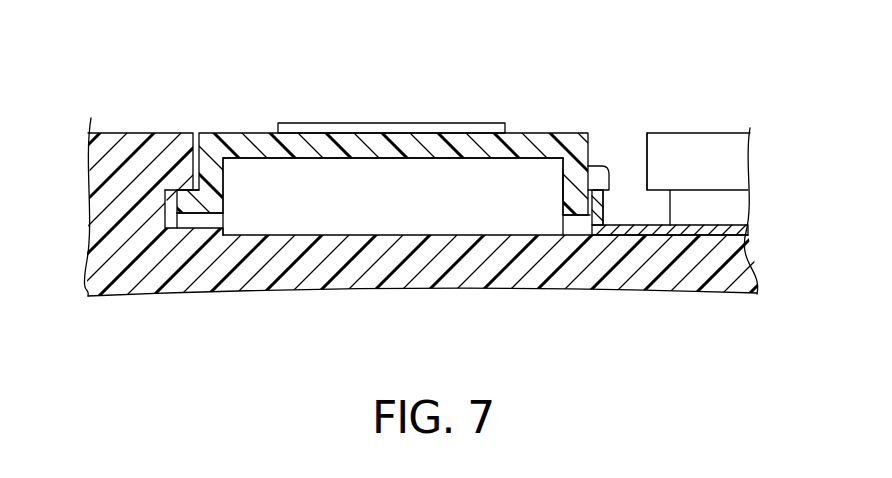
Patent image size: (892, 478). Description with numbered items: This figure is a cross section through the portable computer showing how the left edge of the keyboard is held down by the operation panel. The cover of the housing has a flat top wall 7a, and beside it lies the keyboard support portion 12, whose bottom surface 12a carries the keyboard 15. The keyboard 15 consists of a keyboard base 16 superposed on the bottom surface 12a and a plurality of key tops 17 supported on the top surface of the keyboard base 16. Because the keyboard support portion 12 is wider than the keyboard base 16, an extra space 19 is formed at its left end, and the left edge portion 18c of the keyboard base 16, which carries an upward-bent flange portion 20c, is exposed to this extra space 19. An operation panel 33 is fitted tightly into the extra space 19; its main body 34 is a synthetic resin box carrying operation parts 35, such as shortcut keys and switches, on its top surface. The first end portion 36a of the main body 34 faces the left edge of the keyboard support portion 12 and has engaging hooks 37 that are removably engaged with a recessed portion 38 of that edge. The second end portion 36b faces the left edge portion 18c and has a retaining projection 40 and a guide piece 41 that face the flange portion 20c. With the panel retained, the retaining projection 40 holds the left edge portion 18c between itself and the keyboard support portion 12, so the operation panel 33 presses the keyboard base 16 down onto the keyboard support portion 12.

The top wall 7a is at (122, 133).
The keyboard support portion 12 is at (650, 207).
The bottom surface 12a is at (693, 268).
The keyboard 15 is at (753, 136).
The keyboard base 16 is at (720, 228).
The key tops 17 is at (717, 147).
The left edge portion 18c is at (595, 225).
The extra space 19 is at (397, 235).
The flange portion 20c is at (606, 205).
The operation panel 33 is at (230, 133).
The main body 34 is at (328, 142).
The operation parts 35 is at (438, 125).
The first end portion 36a is at (213, 178).
The second end portion 36b is at (568, 187).
The engaging hooks 37 is at (168, 215).
The recessed portion 38 is at (165, 210).
The retaining projection 40 is at (595, 165).
The guide piece 41 is at (567, 218).